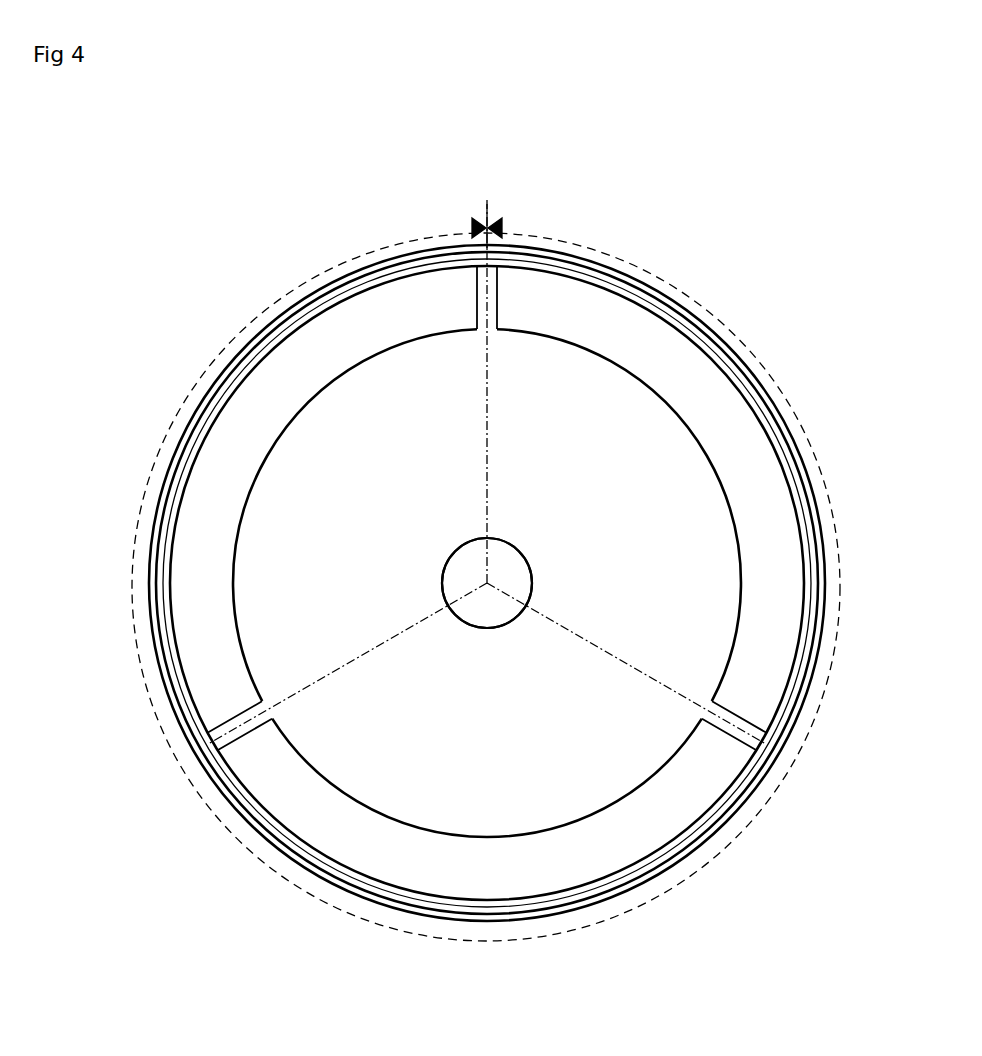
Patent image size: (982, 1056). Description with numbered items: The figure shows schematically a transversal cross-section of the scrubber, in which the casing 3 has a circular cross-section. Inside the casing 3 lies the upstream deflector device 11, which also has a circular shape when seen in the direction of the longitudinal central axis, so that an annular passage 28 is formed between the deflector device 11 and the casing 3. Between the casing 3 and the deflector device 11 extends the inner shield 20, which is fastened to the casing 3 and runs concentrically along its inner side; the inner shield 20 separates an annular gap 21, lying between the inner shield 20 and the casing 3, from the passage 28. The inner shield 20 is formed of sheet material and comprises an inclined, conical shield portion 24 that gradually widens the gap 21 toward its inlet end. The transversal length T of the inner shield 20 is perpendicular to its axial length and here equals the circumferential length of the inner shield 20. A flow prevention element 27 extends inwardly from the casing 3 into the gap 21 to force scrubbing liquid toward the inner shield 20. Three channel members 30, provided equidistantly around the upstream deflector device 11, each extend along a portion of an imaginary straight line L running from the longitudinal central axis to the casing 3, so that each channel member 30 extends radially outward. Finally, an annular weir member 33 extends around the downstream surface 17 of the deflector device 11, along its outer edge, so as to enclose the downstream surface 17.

The transversal length T is at (283, 290).
The casing 3 is at (232, 360).
The gap 21 is at (192, 420).
The inner shield 20 is at (172, 479).
The inclined shield portion 24 is at (156, 548).
The upstream deflector device 11 is at (643, 372).
The annular passage 28 is at (789, 578).
The weir member 33 is at (232, 620).
The downstream surface 17 is at (314, 632).
The channel member 30 is at (498, 291).
The flow prevention element 27 is at (213, 777).
The imaginary straight line L is at (562, 636).